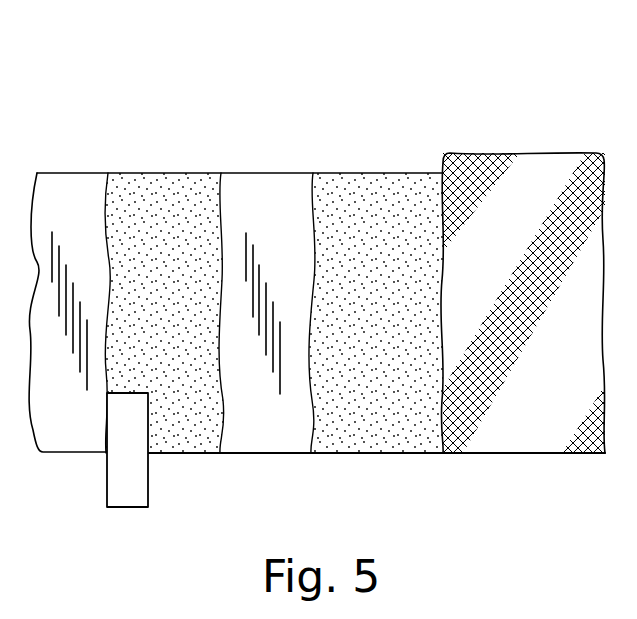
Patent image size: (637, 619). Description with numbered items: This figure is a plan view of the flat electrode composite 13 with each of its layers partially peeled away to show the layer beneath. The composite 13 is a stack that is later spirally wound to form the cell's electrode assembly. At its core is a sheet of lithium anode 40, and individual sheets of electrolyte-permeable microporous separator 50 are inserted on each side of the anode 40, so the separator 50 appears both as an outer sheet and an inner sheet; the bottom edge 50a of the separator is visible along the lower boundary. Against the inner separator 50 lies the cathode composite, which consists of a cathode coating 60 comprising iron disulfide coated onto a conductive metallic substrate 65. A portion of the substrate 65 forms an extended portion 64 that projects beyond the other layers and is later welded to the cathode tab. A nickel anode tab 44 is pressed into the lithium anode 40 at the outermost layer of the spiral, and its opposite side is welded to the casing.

The flat electrode composite 13 is at (207, 75).
The lithium anode 40 is at (167, 178).
The anode tab 44 is at (107, 478).
The separator 50 is at (70, 178).
The bottom edge of separator 50a is at (262, 443).
The cathode coating 60 is at (377, 180).
The extended portion of cathode substrate 64 is at (542, 155).
The cathode substrate 65 is at (520, 445).